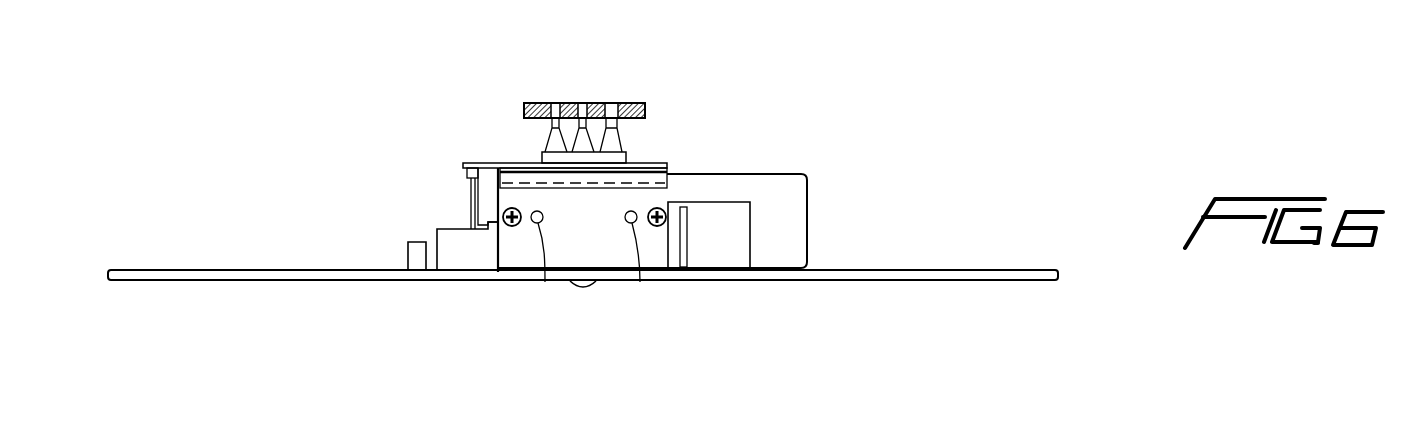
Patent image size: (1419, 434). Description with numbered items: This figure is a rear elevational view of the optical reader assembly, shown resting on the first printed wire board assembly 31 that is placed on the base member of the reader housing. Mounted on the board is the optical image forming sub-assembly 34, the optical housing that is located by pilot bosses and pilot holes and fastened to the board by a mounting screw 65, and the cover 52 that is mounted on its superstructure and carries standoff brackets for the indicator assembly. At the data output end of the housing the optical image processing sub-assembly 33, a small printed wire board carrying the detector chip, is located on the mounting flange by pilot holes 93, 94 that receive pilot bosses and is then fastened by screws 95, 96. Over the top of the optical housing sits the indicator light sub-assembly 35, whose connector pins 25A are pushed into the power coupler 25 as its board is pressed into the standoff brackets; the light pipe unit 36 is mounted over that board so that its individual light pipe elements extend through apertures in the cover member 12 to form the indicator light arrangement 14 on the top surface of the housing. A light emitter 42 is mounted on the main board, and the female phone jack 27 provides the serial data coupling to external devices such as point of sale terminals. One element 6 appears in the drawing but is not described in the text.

The connector 6 is at (626, 101).
The cover member 12 is at (542, 104).
The indicator light arrangement 14 is at (584, 84).
The power coupler 25 is at (452, 260).
The connector pins 25A is at (465, 176).
The female phone jack 27 is at (732, 258).
The printed wire board assembly 31 is at (971, 271).
The optical image processing sub-assembly 33 is at (790, 200).
The optical image forming sub-assembly 34 is at (495, 166).
The indicator light sub-assembly 35 is at (665, 166).
The light pipe unit 36 is at (614, 136).
The light emitter 42 is at (414, 256).
The cover 52 is at (669, 176).
The mounting screw 65 is at (583, 290).
The pilot hole 93 is at (545, 282).
The pilot hole 94 is at (640, 282).
The screw 95 is at (503, 216).
The screw 96 is at (657, 227).